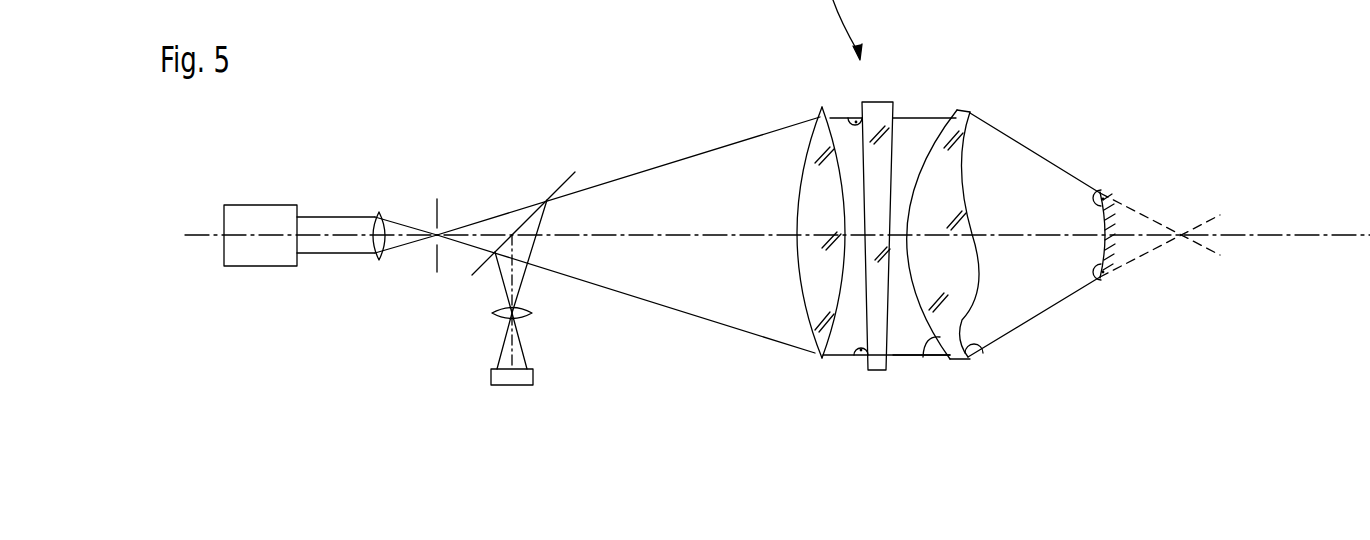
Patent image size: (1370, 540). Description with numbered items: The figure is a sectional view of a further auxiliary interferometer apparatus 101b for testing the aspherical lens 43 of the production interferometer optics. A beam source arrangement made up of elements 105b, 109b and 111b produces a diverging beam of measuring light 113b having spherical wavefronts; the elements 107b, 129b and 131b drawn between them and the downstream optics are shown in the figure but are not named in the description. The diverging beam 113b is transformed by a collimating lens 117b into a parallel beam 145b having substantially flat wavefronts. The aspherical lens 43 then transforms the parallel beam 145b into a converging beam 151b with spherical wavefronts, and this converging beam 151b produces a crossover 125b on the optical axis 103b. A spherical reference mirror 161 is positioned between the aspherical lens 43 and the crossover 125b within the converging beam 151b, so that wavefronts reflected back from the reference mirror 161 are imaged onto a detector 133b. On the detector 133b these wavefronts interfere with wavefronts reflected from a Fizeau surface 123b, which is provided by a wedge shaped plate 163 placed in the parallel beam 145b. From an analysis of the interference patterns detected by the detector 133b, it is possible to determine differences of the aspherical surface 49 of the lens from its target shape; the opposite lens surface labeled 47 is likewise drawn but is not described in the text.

The auxiliary interferometer apparatus 101b is at (698, 96).
The optical axis 103b is at (203, 236).
The beam source arrangement 105b is at (258, 204).
The light beam 107b is at (332, 254).
The beam source arrangement 109b is at (380, 212).
The beam source arrangement 111b is at (443, 212).
The diverging beam of measuring light 113b is at (637, 170).
The collimating lens 117b is at (821, 362).
The Fizeau surface 123b is at (859, 108).
The crossover 125b is at (1182, 238).
The beam splitter 129b is at (565, 175).
The lens 131b is at (532, 313).
The detector 133b is at (533, 378).
The parallel beam 145b is at (903, 358).
The converging beam 151b is at (1060, 298).
The spherical reference mirror 161 is at (1117, 192).
The wedge shaped plate 163 is at (878, 100).
The aspherical lens 43 is at (962, 360).
The lens surface 47 is at (923, 357).
The aspherical surface 49 is at (983, 353).